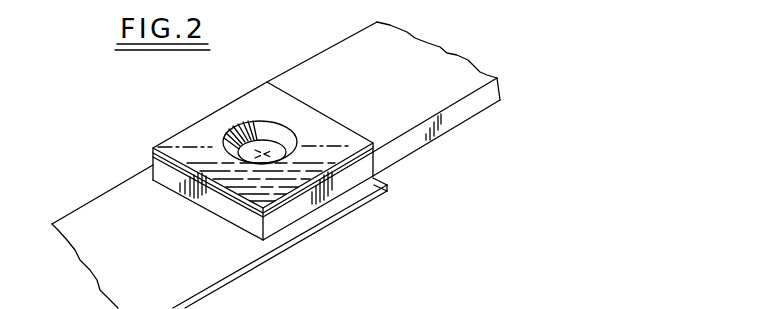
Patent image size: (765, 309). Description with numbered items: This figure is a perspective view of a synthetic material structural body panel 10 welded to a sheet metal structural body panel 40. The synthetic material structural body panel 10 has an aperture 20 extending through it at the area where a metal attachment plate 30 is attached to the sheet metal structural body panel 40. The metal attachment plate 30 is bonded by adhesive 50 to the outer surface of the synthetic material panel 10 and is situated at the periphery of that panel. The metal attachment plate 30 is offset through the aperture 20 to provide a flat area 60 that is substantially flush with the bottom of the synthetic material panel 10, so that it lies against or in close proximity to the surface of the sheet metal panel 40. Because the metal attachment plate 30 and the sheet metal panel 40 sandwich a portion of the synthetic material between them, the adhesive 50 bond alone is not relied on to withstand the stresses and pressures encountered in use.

The synthetic material structural body panel 10 is at (443, 67).
The aperture 20 is at (258, 146).
The metal attachment plate 30 is at (188, 137).
The sheet metal structural body panel 40 is at (118, 212).
The adhesive 50 is at (152, 155).
The flat area 60 is at (238, 142).